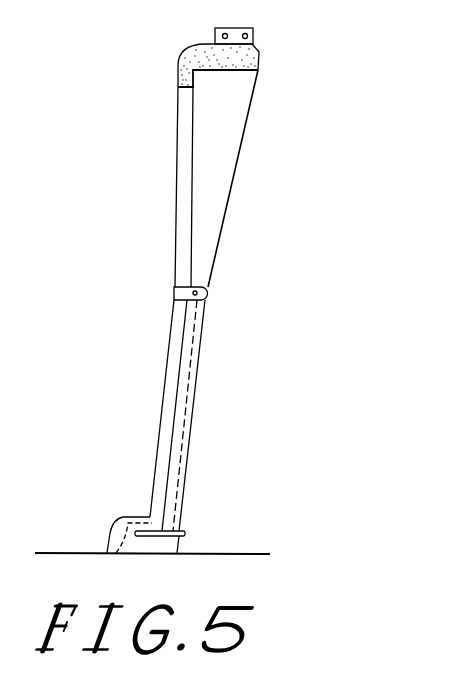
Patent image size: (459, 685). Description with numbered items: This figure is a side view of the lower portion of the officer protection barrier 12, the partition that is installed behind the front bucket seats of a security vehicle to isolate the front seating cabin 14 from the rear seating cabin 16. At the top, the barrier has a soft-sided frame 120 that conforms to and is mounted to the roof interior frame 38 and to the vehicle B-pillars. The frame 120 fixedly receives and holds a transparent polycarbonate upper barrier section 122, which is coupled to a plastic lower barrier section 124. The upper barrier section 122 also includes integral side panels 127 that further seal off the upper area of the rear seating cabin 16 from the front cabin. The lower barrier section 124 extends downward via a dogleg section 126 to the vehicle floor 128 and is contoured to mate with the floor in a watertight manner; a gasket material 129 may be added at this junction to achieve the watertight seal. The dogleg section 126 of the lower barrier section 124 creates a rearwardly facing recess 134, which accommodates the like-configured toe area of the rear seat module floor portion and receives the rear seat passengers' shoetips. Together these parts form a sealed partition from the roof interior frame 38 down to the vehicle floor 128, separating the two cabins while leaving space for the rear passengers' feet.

The officer protection barrier 12 is at (172, 293).
The front seating cabin 14 is at (143, 224).
The rear seating cabin 16 is at (323, 112).
The roof interior frame 38 is at (253, 33).
The soft-sided frame 120 is at (258, 62).
The upper barrier section 122 is at (235, 172).
The lower barrier section 124 is at (195, 403).
The dogleg section 126 is at (107, 540).
The integral side panels 127 is at (213, 168).
The vehicle floor 128 is at (232, 552).
The gasket material 129 is at (160, 557).
The rearwardly facing recess 134 is at (137, 517).